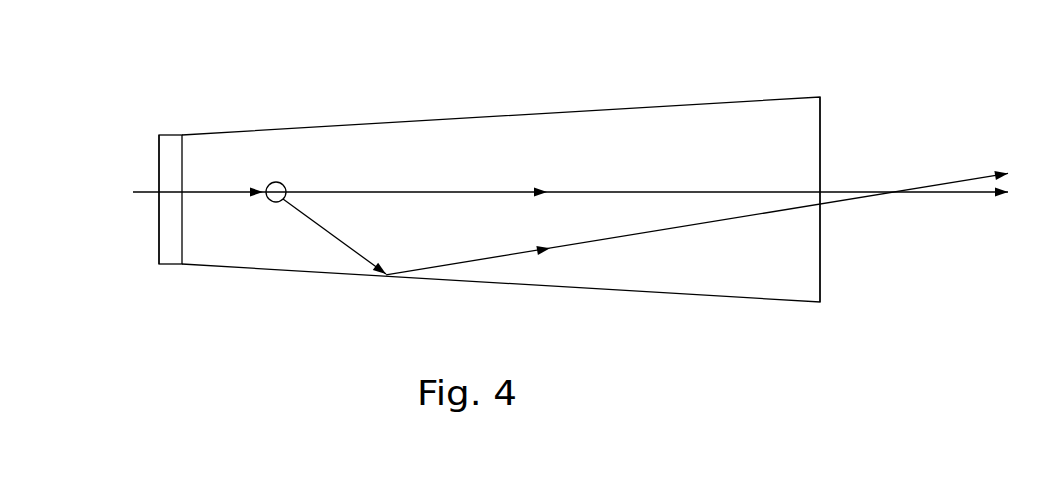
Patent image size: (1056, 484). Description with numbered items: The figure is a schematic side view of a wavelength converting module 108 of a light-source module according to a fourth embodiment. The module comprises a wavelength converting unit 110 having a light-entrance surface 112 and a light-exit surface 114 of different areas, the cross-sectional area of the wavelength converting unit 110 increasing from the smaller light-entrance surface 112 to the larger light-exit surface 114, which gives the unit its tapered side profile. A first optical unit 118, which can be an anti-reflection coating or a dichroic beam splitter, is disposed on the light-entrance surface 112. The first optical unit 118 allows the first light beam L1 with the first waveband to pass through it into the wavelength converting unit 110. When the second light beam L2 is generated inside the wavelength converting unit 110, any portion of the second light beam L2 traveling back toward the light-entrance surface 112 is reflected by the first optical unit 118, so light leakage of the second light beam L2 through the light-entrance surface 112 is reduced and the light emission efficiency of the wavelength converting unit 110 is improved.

The wavelength converting module 108 is at (100, 62).
The wavelength converting unit 110 is at (450, 119).
The light-entrance surface 112 is at (170, 154).
The light-exit surface 114 is at (834, 250).
The first optical unit 118 is at (159, 227).
The first light beam L1 is at (142, 190).
The second light beam L2 is at (893, 192).